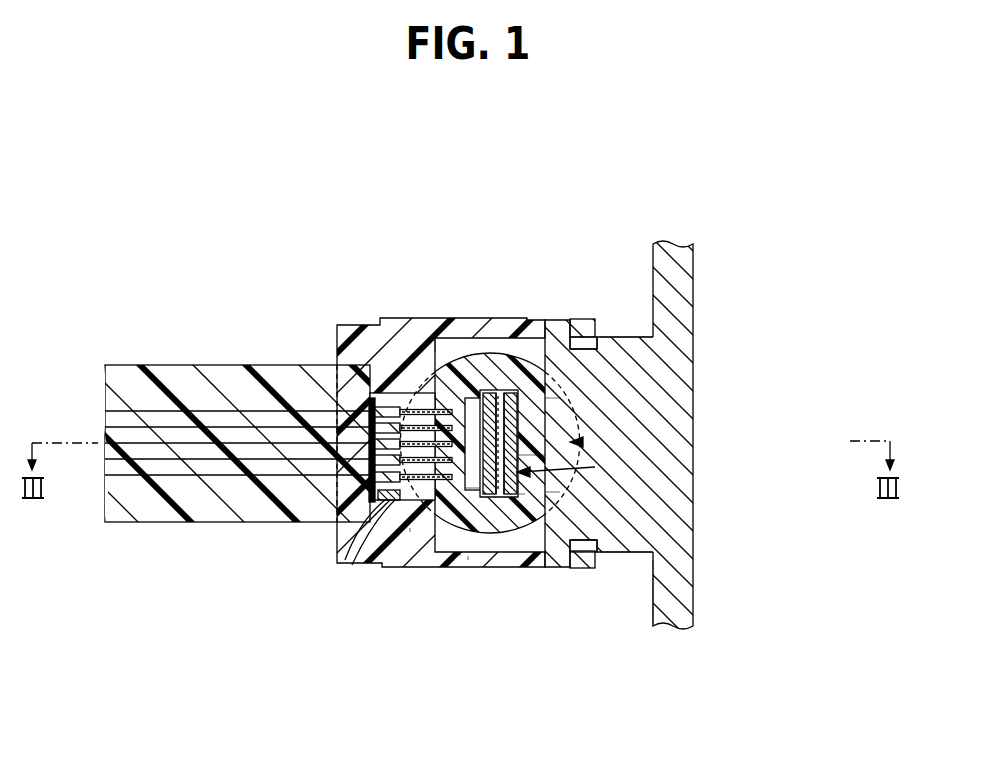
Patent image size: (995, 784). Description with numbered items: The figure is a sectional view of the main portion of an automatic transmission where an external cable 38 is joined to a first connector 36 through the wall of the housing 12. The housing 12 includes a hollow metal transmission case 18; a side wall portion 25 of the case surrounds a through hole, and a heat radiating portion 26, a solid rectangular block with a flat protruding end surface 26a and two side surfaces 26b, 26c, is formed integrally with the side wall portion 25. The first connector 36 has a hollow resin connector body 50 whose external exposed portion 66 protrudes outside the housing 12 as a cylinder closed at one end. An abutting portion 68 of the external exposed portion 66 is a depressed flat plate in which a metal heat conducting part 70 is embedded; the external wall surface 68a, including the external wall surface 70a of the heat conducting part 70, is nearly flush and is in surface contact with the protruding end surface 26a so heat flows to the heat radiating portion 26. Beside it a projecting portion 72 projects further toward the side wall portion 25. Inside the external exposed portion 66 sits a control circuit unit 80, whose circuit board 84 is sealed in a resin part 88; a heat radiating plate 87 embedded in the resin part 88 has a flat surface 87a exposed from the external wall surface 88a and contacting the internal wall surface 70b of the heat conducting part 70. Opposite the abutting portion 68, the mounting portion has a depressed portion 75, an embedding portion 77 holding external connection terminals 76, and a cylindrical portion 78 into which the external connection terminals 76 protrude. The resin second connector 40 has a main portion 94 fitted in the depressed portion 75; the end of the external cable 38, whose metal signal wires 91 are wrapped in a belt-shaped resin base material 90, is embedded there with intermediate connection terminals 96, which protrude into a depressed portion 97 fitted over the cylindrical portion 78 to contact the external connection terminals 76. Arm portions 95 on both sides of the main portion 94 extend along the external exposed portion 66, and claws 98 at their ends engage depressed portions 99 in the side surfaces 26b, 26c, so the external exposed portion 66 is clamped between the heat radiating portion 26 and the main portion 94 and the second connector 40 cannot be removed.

The housing 12 is at (702, 392).
The transmission case 18 is at (690, 253).
The side wall portion 25 is at (690, 594).
The heat radiating portion 26 is at (628, 338).
The protruding end surface 26a is at (690, 420).
The side surface 26b is at (600, 565).
The side surface 26c is at (580, 335).
The first connector 36 is at (710, 433).
The external cable 38 is at (214, 403).
The second connector 40 is at (328, 322).
The connector body 50 is at (583, 442).
The external exposed portion 66 is at (470, 560).
The abutting portion 68 is at (540, 352).
The external wall surface 68a is at (548, 398).
The heat conducting part 70 is at (516, 392).
The external wall surface 70a is at (547, 462).
The internal wall surface 70b is at (490, 500).
The projecting portion 72 is at (693, 492).
The depressed portion 75 is at (415, 530).
The external connection terminals 76 is at (437, 395).
The embedding portion 77 is at (462, 555).
The cylindrical portion 78 is at (373, 500).
The control circuit unit 80 is at (595, 467).
The circuit board 84 is at (496, 392).
The heat radiating plate 87 is at (500, 392).
The flat surface 87a is at (522, 500).
The resin part 88 is at (466, 398).
The external wall surface 88a is at (500, 560).
The base material 90 is at (113, 517).
The signal wires 91 is at (125, 405).
The main portion 94 is at (342, 537).
The arm portions 95 is at (447, 360).
The intermediate connection terminals 96 is at (385, 402).
The depressed portion 97 is at (397, 500).
The claws 98 is at (597, 318).
The depressed portions 99 is at (583, 350).